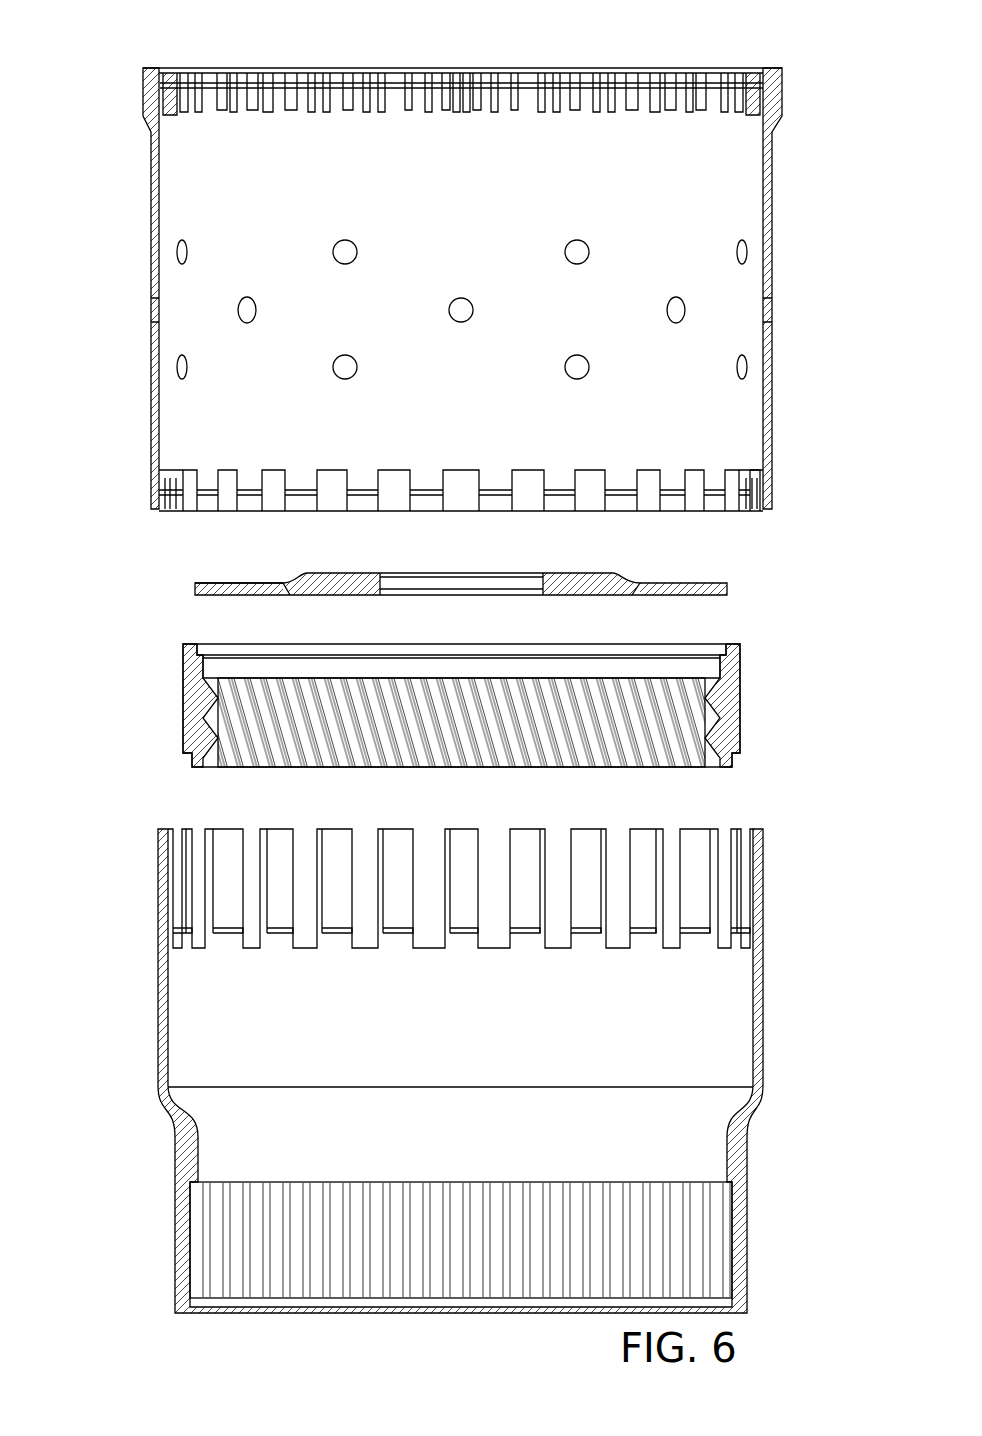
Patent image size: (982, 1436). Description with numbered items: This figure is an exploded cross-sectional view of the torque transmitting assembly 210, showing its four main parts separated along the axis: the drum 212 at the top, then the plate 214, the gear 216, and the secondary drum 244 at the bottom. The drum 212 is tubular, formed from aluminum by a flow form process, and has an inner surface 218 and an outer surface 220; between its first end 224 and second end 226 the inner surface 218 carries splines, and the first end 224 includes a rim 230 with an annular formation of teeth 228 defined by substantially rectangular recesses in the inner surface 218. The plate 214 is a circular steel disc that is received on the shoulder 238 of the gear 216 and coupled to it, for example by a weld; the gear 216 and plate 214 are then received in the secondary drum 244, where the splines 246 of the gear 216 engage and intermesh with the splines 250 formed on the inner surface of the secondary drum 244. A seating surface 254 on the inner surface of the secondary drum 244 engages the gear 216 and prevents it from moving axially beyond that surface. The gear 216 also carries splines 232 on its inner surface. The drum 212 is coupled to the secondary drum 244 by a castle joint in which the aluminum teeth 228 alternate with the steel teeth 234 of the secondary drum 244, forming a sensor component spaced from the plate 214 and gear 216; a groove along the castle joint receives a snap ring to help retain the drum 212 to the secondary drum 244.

The torque transmitting assembly 210 is at (122, 35).
The drum 212 is at (795, 200).
The plate 214 is at (740, 588).
The gear 216 is at (755, 686).
The inner surface 218 is at (763, 218).
The outer surface 220 is at (772, 270).
The first end 224 is at (770, 509).
The second end 226 is at (770, 68).
The teeth 228 is at (360, 495).
The rim 230 is at (163, 488).
The splines 232 is at (650, 753).
The teeth 234 is at (222, 829).
The shoulder 238 is at (720, 652).
The secondary drum 244 is at (778, 1011).
The splines 246 is at (742, 733).
The splines 250 is at (440, 1237).
The seating surface 254 is at (733, 1185).